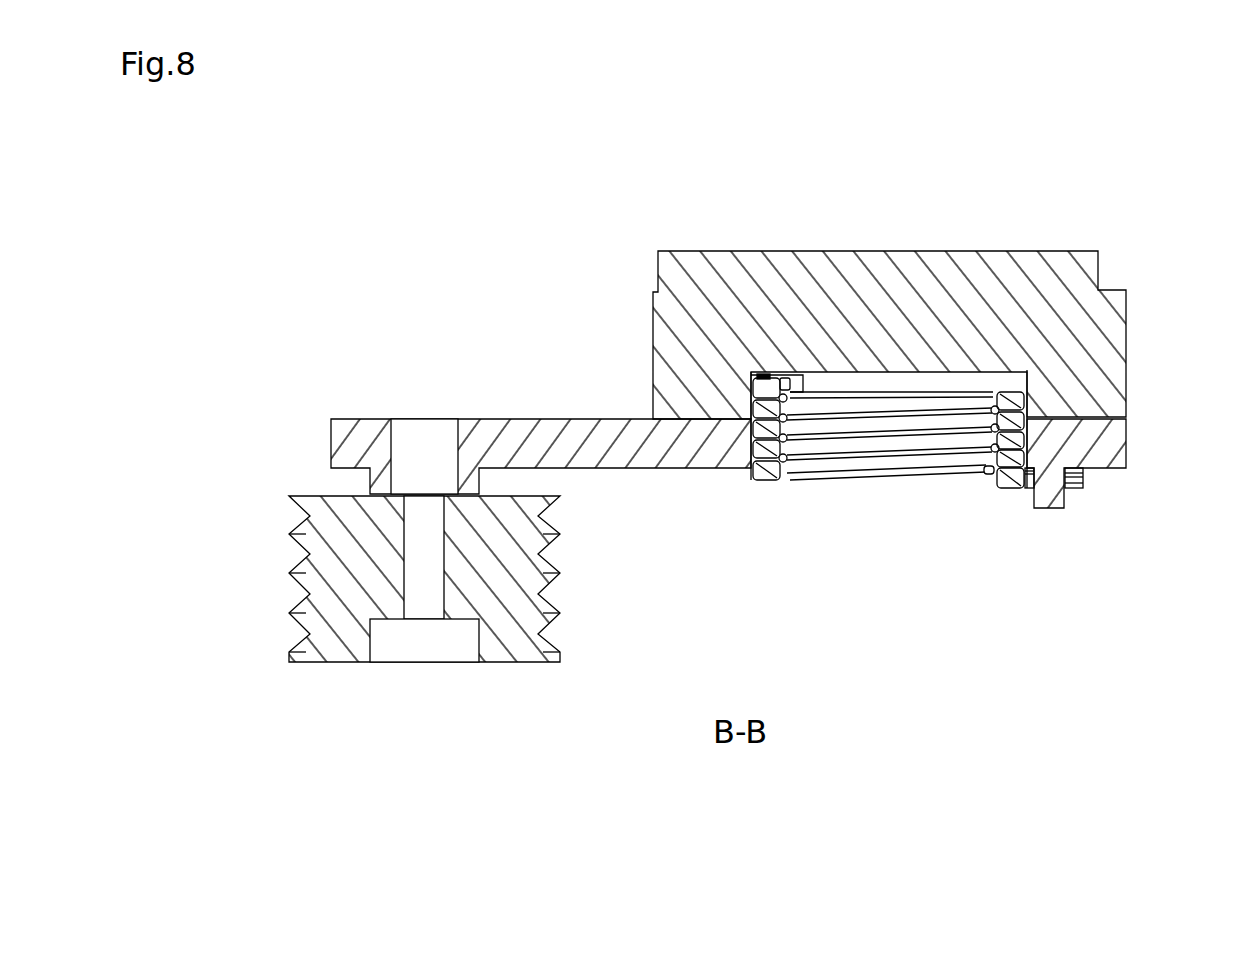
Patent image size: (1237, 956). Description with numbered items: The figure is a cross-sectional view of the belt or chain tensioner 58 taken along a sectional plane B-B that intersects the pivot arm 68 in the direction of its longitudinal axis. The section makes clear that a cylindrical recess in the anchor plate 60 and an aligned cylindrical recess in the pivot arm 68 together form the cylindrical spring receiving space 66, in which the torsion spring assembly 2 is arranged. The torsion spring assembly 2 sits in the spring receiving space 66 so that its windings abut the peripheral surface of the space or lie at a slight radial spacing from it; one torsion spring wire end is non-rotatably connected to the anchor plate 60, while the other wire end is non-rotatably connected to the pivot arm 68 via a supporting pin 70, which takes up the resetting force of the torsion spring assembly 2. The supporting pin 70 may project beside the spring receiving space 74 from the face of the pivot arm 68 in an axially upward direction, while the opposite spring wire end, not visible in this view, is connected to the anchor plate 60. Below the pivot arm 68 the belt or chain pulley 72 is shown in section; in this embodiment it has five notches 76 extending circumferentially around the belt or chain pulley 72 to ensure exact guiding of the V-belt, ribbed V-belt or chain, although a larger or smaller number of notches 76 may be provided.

The belt or chain tensioner 58 is at (538, 263).
The torsion spring assembly 2 is at (797, 422).
The anchor plate 60 is at (993, 283).
The spring receiving space 66 is at (1013, 377).
The pivot arm 68 is at (615, 448).
The supporting pin 70 is at (1047, 487).
The belt or chain pulley 72 is at (350, 575).
The spring receiving space 74 is at (1030, 437).
The notches 76 is at (297, 518).